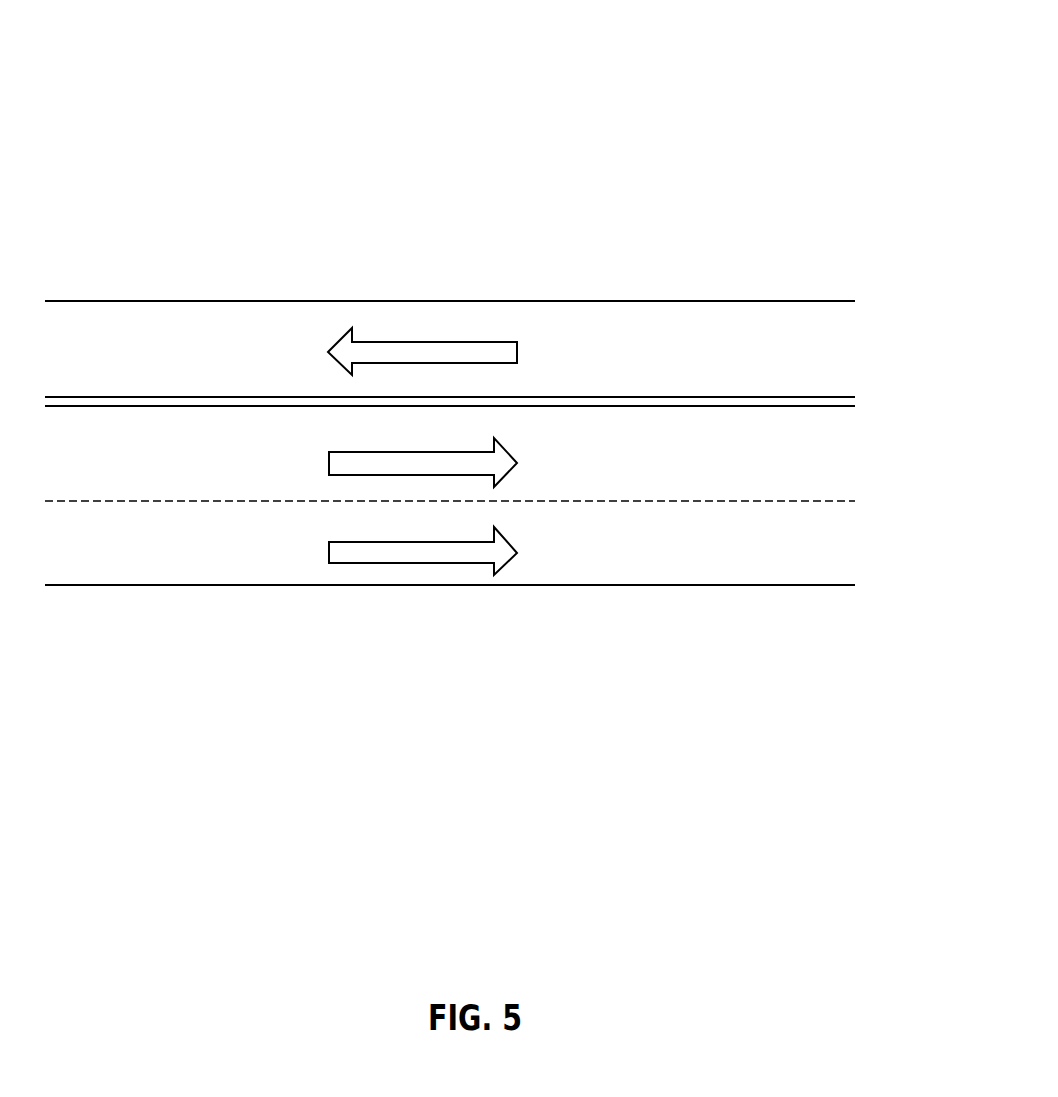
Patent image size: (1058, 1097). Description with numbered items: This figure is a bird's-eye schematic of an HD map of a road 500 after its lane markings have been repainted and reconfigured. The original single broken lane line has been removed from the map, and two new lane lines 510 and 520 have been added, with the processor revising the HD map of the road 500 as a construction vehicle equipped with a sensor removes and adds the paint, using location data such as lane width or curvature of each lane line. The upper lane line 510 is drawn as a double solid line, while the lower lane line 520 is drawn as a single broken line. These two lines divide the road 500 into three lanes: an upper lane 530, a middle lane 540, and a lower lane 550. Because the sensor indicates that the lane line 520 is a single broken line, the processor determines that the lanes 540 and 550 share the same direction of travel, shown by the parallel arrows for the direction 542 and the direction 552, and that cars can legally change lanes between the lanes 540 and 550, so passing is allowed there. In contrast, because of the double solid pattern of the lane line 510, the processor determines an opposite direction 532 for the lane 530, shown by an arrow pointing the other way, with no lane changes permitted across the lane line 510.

The road 500 is at (832, 92).
The lane line 510 is at (67, 405).
The lane line 520 is at (67, 502).
The lane 530 is at (450, 334).
The direction 532 is at (422, 345).
The lane 540 is at (450, 453).
The direction 542 is at (423, 456).
The lane 550 is at (450, 563).
The direction 552 is at (423, 544).